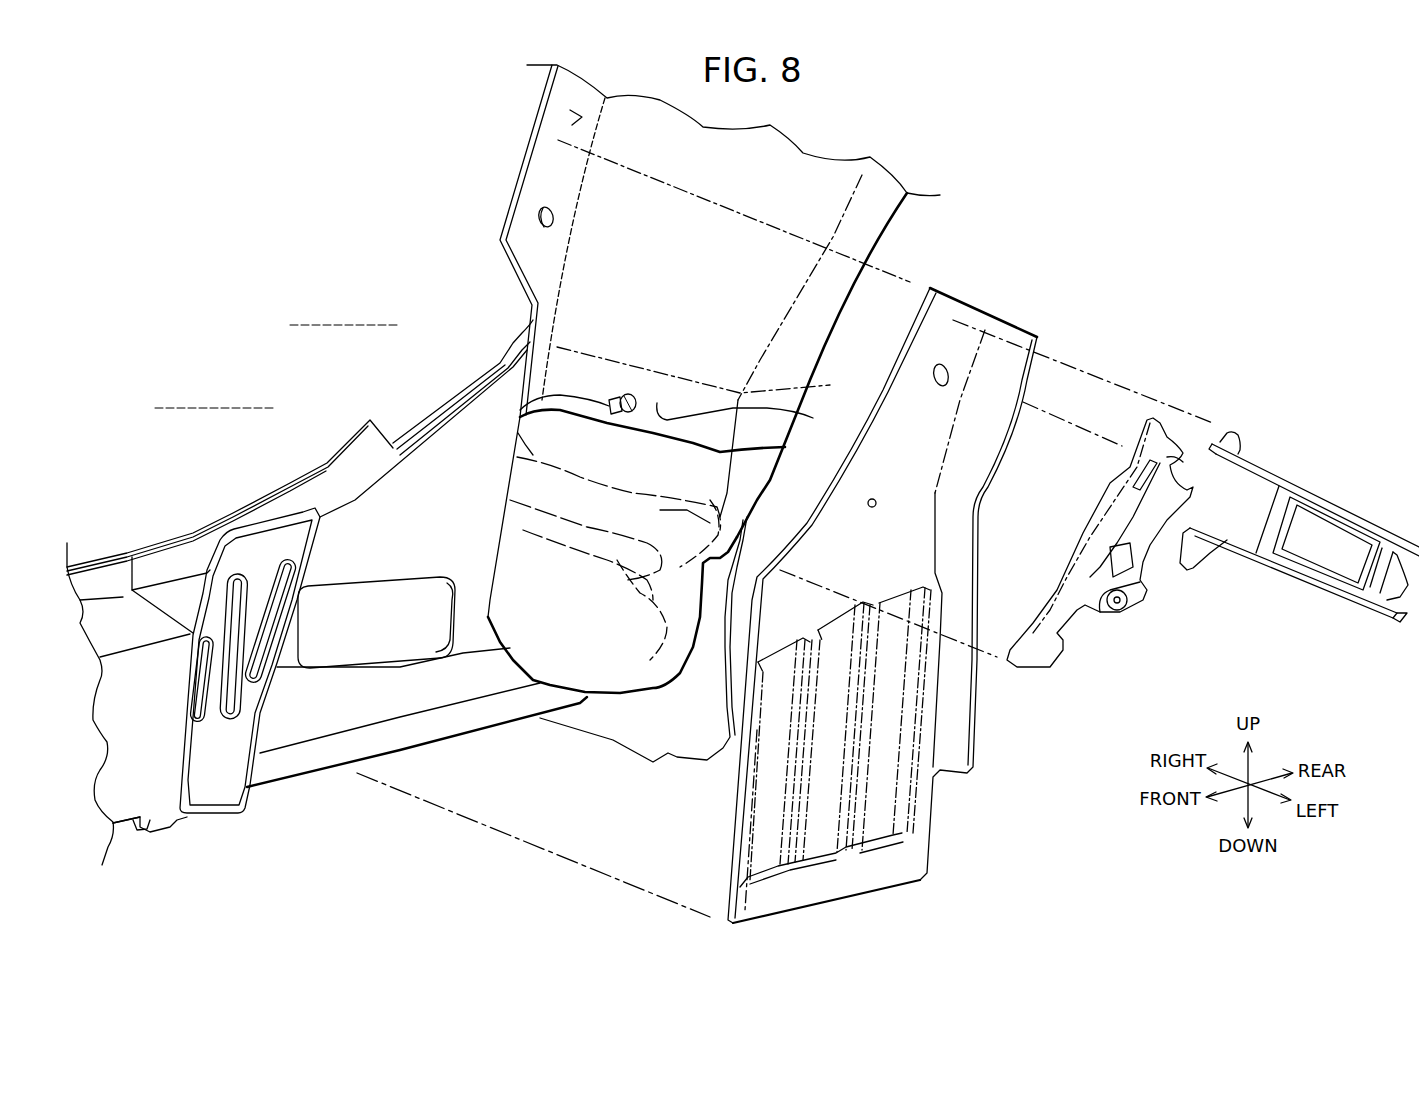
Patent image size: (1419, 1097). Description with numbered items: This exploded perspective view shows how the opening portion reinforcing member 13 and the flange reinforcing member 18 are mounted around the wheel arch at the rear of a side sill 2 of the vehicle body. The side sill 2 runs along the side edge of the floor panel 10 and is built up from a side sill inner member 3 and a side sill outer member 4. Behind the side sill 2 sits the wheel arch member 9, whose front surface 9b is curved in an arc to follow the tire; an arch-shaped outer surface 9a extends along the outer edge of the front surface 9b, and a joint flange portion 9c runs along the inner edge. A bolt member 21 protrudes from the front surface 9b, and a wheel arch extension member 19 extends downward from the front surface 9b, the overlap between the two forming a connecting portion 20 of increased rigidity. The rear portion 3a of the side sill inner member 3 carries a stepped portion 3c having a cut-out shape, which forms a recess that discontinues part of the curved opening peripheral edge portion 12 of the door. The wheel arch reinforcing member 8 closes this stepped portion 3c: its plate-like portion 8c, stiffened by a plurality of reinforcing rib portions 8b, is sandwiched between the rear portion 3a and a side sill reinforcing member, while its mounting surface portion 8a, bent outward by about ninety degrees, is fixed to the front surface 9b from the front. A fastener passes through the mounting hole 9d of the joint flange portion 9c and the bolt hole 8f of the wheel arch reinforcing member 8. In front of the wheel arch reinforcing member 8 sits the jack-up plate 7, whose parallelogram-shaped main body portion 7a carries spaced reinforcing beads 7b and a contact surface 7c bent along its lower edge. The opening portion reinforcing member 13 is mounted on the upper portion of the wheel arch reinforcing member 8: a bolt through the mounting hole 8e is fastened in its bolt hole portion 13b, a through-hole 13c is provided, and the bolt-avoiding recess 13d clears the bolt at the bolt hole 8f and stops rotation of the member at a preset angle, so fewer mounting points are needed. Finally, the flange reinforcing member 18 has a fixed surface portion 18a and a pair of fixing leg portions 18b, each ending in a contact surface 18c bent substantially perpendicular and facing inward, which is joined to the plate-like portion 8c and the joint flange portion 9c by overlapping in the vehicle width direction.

The side sill 2 is at (186, 492).
The side sill inner member 3 is at (320, 774).
The rear portion 3a is at (348, 468).
The stepped portion 3c is at (427, 430).
The side sill outer member 4 is at (123, 620).
The jack-up plate 7 is at (270, 706).
The main body portion 7a is at (266, 567).
The reinforcing bead 7b is at (262, 572).
The contact surface 7c is at (203, 818).
The wheel arch reinforcing member 8 is at (1006, 315).
The mounting surface portion 8a is at (983, 520).
The reinforcing rib portions 8b is at (800, 828).
The plate-like portion 8c is at (843, 567).
The mounting hole 8e is at (877, 505).
The bolt hole 8f is at (938, 372).
The wheel arch member 9 is at (888, 233).
The arch-shaped outer surface 9a is at (797, 357).
The front surface 9b is at (813, 418).
The joint flange portion 9c is at (577, 118).
The mounting hole 9d is at (539, 217).
The floor panel 10 is at (248, 361).
The opening peripheral edge portion 12 is at (546, 80).
The opening portion reinforcing member 13 is at (1081, 638).
The bolt hole portion 13b is at (1120, 600).
The through-hole 13c is at (1133, 567).
The bolt-avoiding recess 13d is at (1166, 457).
The flange reinforcing member 18 is at (1302, 588).
The fixed surface portion 18a is at (1410, 603).
The fixing leg portions 18b is at (1263, 470).
The contact surface 18c is at (1243, 447).
The wheel arch extension member 19 is at (605, 657).
The connecting portion 20 is at (613, 376).
The bolt member 21 is at (608, 407).